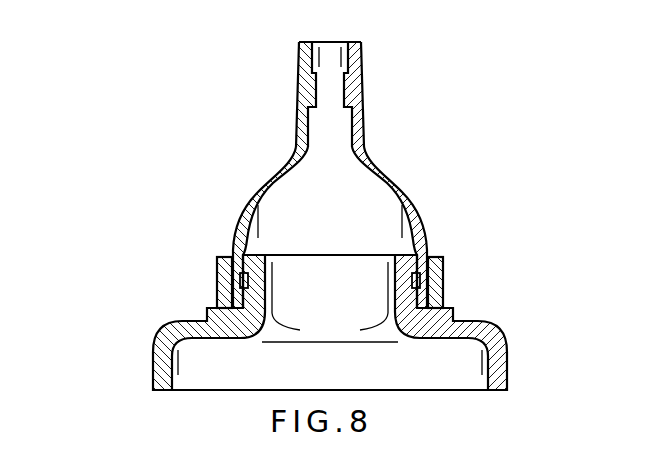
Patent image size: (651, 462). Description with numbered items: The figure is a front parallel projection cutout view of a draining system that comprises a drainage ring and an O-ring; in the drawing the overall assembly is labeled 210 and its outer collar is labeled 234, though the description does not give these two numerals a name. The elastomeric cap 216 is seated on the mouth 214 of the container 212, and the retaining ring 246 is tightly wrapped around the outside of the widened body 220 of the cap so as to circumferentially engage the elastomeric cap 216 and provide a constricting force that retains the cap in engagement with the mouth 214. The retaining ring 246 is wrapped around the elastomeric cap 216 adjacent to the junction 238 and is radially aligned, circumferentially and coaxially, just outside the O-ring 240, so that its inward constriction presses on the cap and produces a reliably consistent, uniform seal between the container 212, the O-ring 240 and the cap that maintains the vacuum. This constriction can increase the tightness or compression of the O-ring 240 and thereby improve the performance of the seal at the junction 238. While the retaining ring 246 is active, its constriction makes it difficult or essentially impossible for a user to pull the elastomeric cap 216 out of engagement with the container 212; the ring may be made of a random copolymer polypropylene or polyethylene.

The nipple assembly 210 is at (135, 88).
The container 212 is at (153, 380).
The mouth 214 is at (292, 297).
The elastomeric cap 216 is at (400, 192).
The widened body 220 is at (257, 193).
The retaining ring 234 is at (445, 293).
The junction 238 is at (452, 240).
The O-ring 240 is at (424, 275).
The retaining ring 246 is at (222, 262).